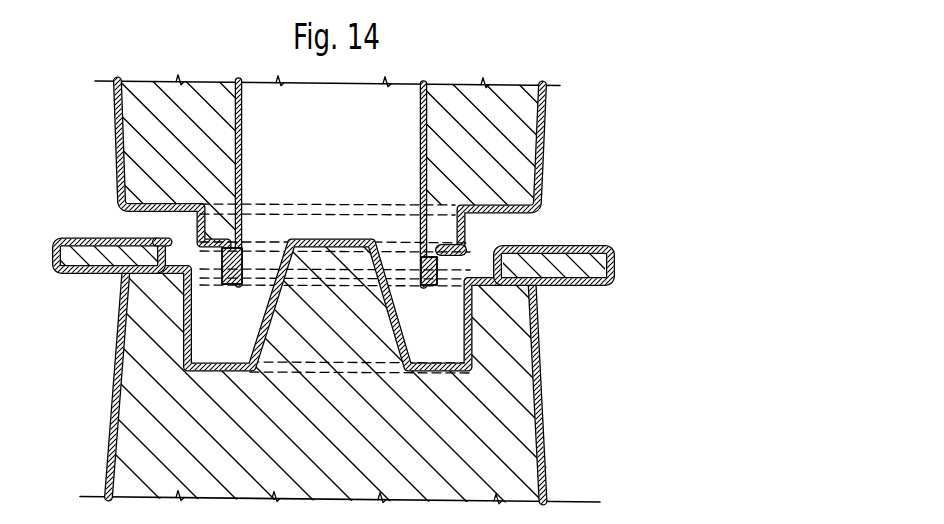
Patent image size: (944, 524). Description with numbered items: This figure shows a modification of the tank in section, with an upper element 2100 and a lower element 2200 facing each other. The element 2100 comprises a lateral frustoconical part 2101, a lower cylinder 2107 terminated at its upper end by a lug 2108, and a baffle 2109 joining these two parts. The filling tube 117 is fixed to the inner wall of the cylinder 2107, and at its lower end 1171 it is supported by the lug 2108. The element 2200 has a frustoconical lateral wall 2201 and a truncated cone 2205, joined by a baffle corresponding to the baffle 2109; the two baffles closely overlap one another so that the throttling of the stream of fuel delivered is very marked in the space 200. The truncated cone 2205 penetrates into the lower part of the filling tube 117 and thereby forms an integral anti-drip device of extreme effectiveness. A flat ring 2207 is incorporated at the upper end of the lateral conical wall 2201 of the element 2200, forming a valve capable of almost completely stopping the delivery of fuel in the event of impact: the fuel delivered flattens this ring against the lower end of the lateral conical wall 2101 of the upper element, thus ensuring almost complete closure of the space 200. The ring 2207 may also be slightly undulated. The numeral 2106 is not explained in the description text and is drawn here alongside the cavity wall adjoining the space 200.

The tube 117 is at (243, 116).
The lower end of the tube 1171 is at (255, 228).
The element 2100 is at (548, 136).
The lateral frustoconical part 2101 is at (531, 174).
The lower cylinder 2107 is at (216, 262).
The lug 2108 is at (232, 256).
The baffle 2109 is at (482, 242).
The flat ring 2207 is at (613, 264).
The truncated cone 2205 is at (306, 250).
The cavity side wall 2106 is at (533, 290).
The space 200 is at (440, 345).
The frustoconical lateral wall 2201 is at (537, 427).
The element 2200 is at (551, 462).